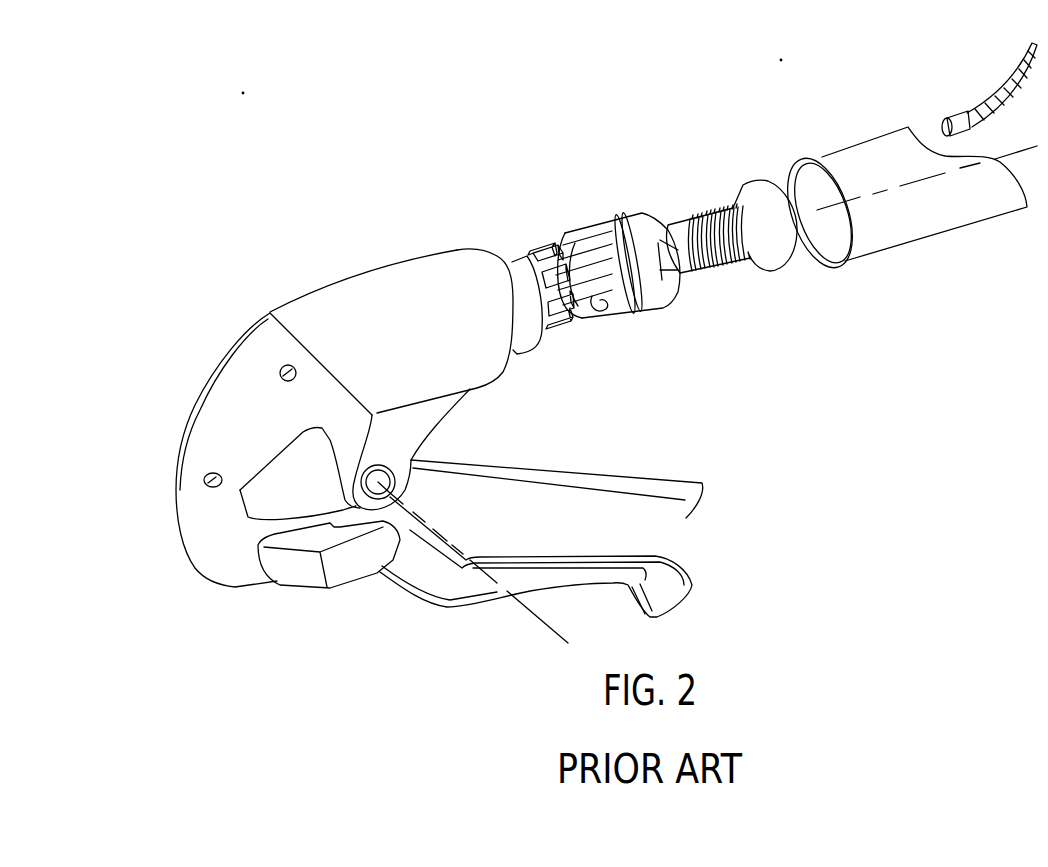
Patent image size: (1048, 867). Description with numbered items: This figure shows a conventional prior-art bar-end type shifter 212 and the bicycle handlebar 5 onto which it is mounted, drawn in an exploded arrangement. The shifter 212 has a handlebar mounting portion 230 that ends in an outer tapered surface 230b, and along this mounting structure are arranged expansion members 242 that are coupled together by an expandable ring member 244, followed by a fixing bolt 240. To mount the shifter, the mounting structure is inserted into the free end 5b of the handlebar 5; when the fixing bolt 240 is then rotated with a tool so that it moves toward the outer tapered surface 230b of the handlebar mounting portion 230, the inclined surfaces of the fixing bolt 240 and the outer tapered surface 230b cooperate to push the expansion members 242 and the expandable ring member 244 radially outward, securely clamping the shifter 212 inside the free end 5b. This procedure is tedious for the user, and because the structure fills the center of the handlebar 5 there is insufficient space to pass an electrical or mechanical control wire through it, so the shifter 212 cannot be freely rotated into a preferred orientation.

The bar-end type shifter 212 is at (363, 274).
The handlebar mounting portion 230 is at (497, 258).
The outer tapered surface 230b is at (556, 328).
The expansion members 242 is at (653, 245).
The expandable ring member 244 is at (616, 220).
The fixing bolt 240 is at (725, 267).
The handlebar 5 is at (912, 242).
The free end 5b is at (812, 230).